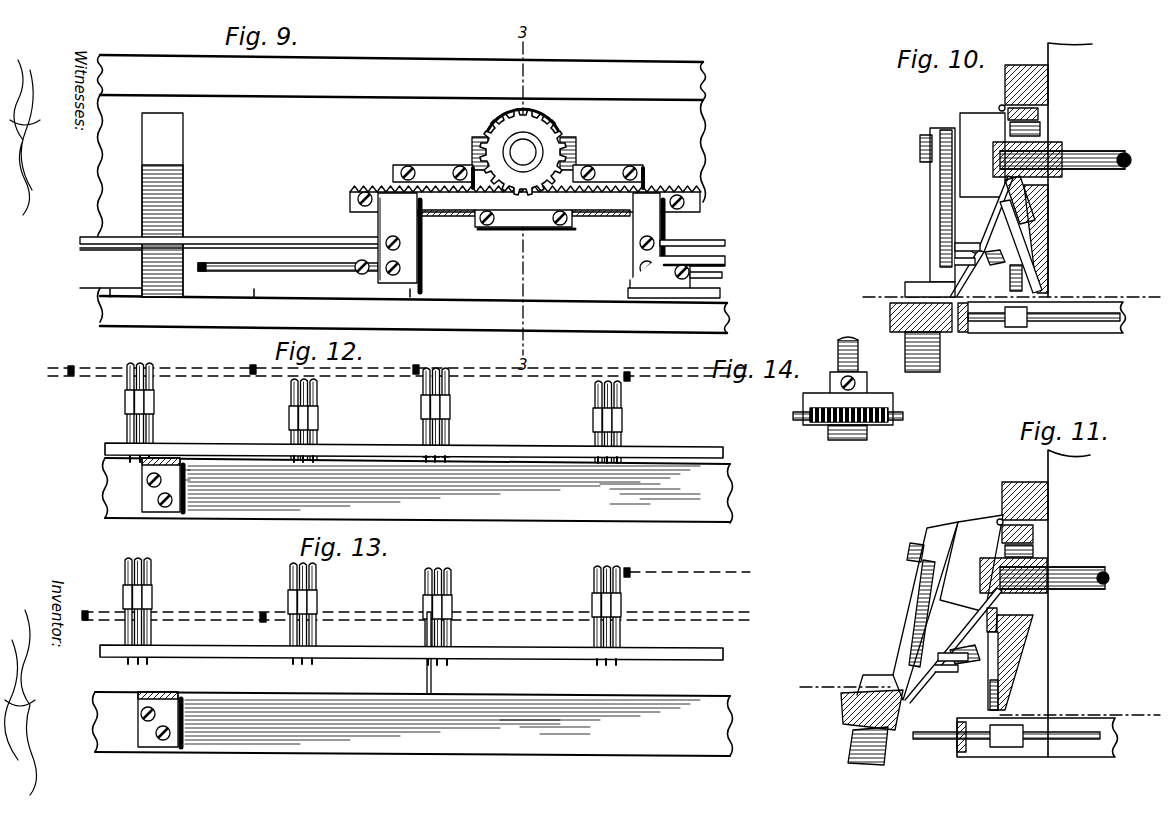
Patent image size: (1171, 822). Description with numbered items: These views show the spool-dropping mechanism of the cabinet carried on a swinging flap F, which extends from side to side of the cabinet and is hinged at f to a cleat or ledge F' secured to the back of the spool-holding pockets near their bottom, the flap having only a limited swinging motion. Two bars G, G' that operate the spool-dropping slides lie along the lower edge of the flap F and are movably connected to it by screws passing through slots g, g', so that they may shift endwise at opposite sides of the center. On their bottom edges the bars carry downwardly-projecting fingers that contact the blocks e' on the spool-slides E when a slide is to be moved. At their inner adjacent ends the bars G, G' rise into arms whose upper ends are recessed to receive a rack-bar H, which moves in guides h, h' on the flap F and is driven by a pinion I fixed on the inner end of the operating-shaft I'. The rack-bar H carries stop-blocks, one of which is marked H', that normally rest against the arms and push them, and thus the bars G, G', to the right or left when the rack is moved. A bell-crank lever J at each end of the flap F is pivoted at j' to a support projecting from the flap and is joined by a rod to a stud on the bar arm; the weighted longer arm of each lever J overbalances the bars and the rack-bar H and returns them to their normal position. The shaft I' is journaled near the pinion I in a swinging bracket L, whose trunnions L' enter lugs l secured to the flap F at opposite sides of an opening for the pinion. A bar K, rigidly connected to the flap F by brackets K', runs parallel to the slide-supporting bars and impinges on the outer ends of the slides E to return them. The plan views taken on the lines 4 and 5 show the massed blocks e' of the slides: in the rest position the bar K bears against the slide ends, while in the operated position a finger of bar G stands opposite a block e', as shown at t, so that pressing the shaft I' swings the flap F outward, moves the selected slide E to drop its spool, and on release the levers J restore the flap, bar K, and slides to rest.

In FIG. 9, the cleat or ledge F' is at (402, 77).
In FIG. 10, the cleat or ledge F' is at (1048, 170).
In FIG. 11, the cleat or ledge F' is at (1046, 603).
In FIG. 9, the flap F is at (405, 214).
In FIG. 10, the flap F is at (1050, 239).
In FIG. 11, the flap F is at (1032, 662).
In FIG. 9, the bracket K' is at (179, 205).
In FIG. 12, the bracket K' is at (179, 468).
In FIG. 13, the bracket K' is at (175, 703).
In FIG. 12, the bar K is at (418, 483).
In FIG. 13, the bar K is at (413, 700).
In FIG. 10, the bar K is at (909, 310).
In FIG. 11, the bar K is at (853, 710).
In FIG. 9, the slot g is at (288, 290).
In FIG. 9, the slot g' is at (719, 282).
In FIG. 9, the bar G' is at (694, 266).
In FIG. 13, the bar G' is at (521, 598).
In FIG. 10, the bar G is at (1046, 269).
In FIG. 11, the bar G is at (1031, 694).
In FIG. 9, the rack-bar H is at (525, 201).
In FIG. 10, the rack-bar H is at (981, 236).
In FIG. 11, the rack-bar H is at (953, 643).
In FIG. 9, the stop-block H' is at (350, 196).
In FIG. 9, the guide h is at (525, 233).
In FIG. 10, the guide h is at (985, 271).
In FIG. 11, the guide h is at (955, 647).
In FIG. 9, the guide h' is at (518, 162).
In FIG. 9, the pinion I is at (521, 146).
In FIG. 10, the pinion I is at (1040, 114).
In FIG. 11, the pinion I is at (1003, 541).
In FIG. 9, the operating-shaft I' is at (543, 143).
In FIG. 14, the operating-shaft I' is at (848, 344).
In FIG. 10, the operating-shaft I' is at (1062, 151).
In FIG. 11, the operating-shaft I' is at (1044, 567).
In FIG. 9, the swinging bracket L is at (539, 146).
In FIG. 14, the swinging bracket L is at (848, 406).
In FIG. 14, the trunnion L' is at (907, 413).
In FIG. 9, the lug l is at (578, 166).
In FIG. 10, the bell-crank lever J is at (930, 194).
In FIG. 11, the bell-crank lever J is at (925, 600).
In FIG. 10, the pivot j' is at (912, 148).
In FIG. 11, the pivot j' is at (897, 554).
In FIG. 10, the hinge f is at (999, 107).
In FIG. 11, the hinge f is at (994, 516).
In FIG. 13, the spool-slide E is at (316, 568).
In FIG. 12, the block e' is at (358, 416).
In FIG. 13, the block e' is at (360, 623).
In FIG. 13, the position of finger opposite block t is at (427, 620).
In FIG. 10, the section line 4 is at (1003, 298).
In FIG. 11, the section line 5 is at (975, 702).